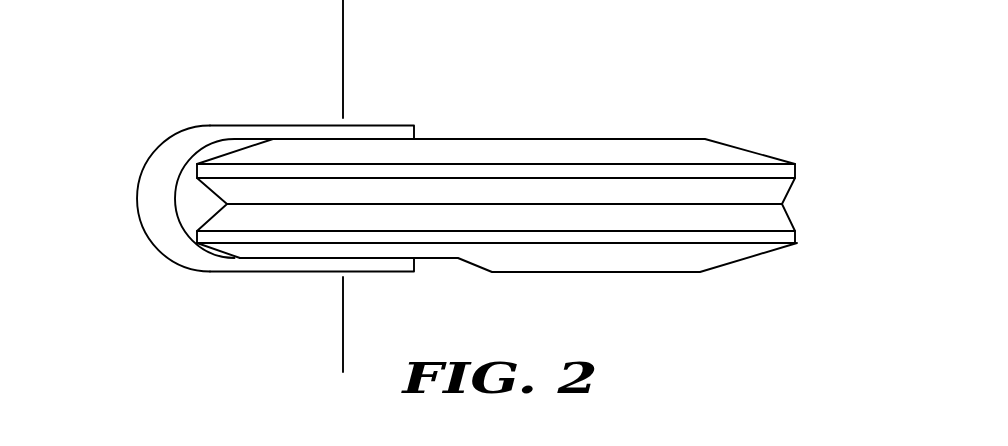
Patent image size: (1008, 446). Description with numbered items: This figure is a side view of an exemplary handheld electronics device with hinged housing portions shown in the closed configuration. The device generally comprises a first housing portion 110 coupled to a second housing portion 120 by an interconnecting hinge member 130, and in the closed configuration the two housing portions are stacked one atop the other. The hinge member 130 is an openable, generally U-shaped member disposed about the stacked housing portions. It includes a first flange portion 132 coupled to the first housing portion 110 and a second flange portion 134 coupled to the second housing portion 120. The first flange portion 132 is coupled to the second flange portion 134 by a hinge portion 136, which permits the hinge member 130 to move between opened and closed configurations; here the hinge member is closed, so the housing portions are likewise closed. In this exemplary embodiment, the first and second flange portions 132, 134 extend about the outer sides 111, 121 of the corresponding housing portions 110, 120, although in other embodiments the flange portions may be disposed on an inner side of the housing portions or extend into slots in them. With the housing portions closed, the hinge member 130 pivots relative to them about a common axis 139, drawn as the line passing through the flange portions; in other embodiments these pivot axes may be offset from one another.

The first housing portion 110 is at (522, 205).
The outer side of first housing portion 111 is at (643, 140).
The second housing portion 120 is at (795, 242).
The outer side of second housing portion 121 is at (572, 270).
The hinge member 130 is at (238, 180).
The first flange portion 132 is at (300, 132).
The second flange portion 134 is at (278, 273).
The hinge portion 136 is at (162, 170).
The common axis 139 is at (343, 43).